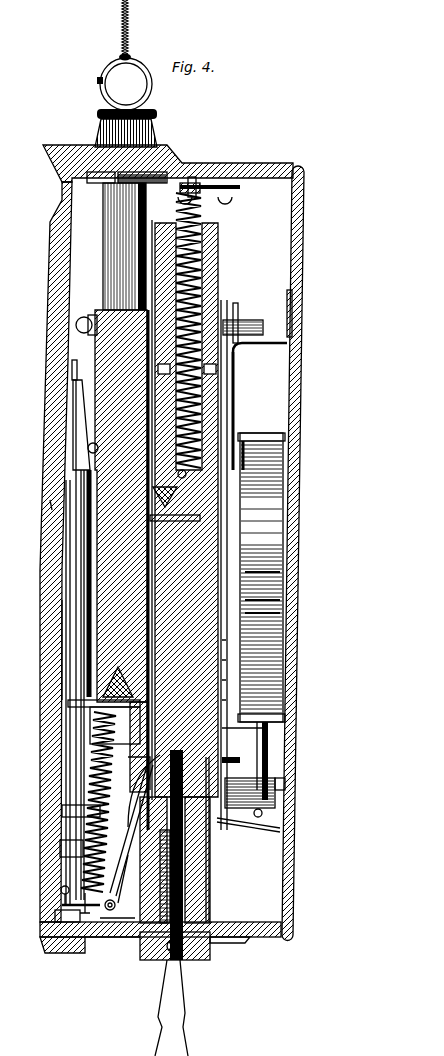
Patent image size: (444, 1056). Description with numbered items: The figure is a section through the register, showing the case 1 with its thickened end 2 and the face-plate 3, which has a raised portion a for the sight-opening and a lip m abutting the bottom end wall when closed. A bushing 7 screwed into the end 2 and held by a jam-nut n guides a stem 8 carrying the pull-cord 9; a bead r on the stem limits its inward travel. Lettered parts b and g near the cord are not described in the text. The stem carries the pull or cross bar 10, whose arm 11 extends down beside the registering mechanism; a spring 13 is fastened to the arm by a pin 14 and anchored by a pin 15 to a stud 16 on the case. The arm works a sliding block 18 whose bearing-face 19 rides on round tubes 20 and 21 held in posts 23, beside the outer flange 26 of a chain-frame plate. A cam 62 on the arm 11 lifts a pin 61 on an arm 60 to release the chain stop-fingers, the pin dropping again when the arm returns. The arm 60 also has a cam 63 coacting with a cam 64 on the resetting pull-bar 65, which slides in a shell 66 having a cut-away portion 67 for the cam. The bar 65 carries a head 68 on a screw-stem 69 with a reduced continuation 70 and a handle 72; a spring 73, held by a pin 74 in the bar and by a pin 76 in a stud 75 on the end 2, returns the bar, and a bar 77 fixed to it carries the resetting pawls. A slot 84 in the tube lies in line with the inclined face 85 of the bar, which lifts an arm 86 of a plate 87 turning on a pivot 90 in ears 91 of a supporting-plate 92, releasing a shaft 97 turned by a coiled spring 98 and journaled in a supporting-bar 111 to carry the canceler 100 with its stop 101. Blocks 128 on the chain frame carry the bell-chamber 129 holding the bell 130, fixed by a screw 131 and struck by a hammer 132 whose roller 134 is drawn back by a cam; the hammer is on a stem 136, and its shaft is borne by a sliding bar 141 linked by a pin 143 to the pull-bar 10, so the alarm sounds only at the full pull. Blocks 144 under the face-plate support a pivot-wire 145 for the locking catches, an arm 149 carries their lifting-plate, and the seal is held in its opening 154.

The case 1 is at (60, 170).
The end 2 is at (62, 148).
The face-plate 3 is at (62, 195).
The bushing 7 is at (156, 127).
The stem 8 is at (107, 258).
The pull-cord 9 is at (136, 27).
The pull or cross bar 10 is at (77, 327).
The arm 11 is at (100, 497).
The spring 13 is at (90, 817).
The pin 14 is at (77, 703).
The pin 15 is at (62, 905).
The stud 16 is at (87, 950).
The sliding block 18 is at (100, 685).
The bearing-face 19 is at (90, 620).
The tube 20 is at (72, 545).
The middle tube 21 is at (132, 773).
The post 23 is at (72, 380).
The outer flange 26 is at (72, 517).
The arm 60 is at (83, 400).
The pin 61 is at (88, 448).
The cam 62 is at (67, 488).
The cam 63 is at (229, 410).
The cam 64 is at (234, 377).
The pull-bar 65 is at (186, 510).
The shell or tubing 66 is at (241, 424).
The cut-away portion 67 is at (169, 565).
The head 68 is at (205, 962).
The screw-stem 69 is at (180, 872).
The continuation 70 is at (210, 838).
The handle 72 is at (177, 1037).
The spring 73 is at (220, 248).
The pin 74 is at (285, 461).
The stud 75 is at (200, 168).
The pin 76 is at (224, 201).
The bar 77 is at (250, 381).
The slot 84 is at (135, 791).
The inclined face 85 is at (265, 731).
The arm 86 is at (292, 822).
The plate 87 is at (185, 905).
The pivot 90 is at (110, 920).
The ears 91 is at (115, 905).
The supporting-plate 92 is at (131, 879).
The shaft 97 is at (131, 829).
The coiled spring 98 is at (60, 847).
The canceler 100 is at (63, 757).
The stop 101 is at (43, 648).
The supporting-bar 111 is at (38, 862).
The blocks 128 is at (285, 437).
The bell-chamber 129 is at (242, 600).
The bell 130 is at (262, 613).
The screw or pin 131 is at (252, 572).
The hammer 132 is at (266, 788).
The roller 134 is at (260, 789).
The stem 136 is at (265, 743).
The sliding bar 141 is at (296, 336).
The pin 143 is at (245, 320).
The ears or blocks 144 is at (62, 912).
The pivot-wire 145 is at (60, 890).
The arm 149 is at (133, 950).
The opening 154 is at (227, 947).
The raised or struck-up portion a is at (50, 505).
The knot b is at (120, 55).
The tab g is at (100, 81).
The bead r is at (95, 107).
The jam-nut n is at (100, 186).
The projecting portion or lip m is at (77, 950).